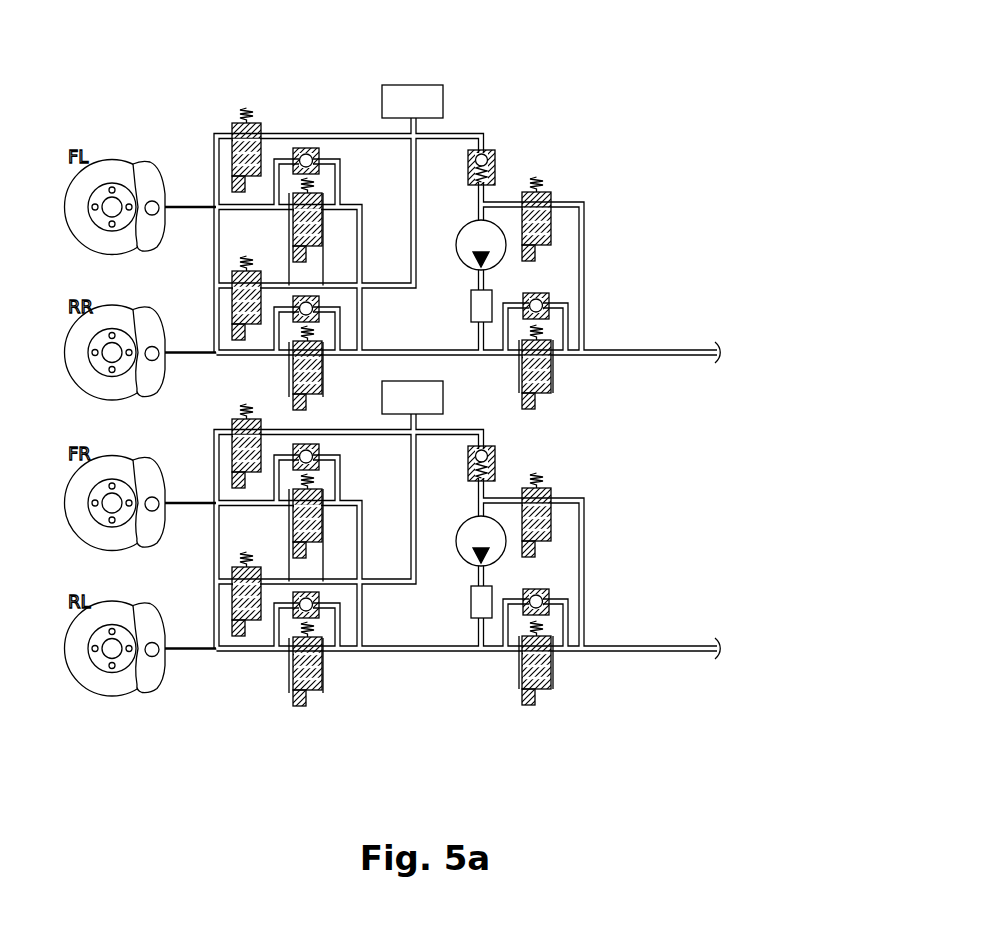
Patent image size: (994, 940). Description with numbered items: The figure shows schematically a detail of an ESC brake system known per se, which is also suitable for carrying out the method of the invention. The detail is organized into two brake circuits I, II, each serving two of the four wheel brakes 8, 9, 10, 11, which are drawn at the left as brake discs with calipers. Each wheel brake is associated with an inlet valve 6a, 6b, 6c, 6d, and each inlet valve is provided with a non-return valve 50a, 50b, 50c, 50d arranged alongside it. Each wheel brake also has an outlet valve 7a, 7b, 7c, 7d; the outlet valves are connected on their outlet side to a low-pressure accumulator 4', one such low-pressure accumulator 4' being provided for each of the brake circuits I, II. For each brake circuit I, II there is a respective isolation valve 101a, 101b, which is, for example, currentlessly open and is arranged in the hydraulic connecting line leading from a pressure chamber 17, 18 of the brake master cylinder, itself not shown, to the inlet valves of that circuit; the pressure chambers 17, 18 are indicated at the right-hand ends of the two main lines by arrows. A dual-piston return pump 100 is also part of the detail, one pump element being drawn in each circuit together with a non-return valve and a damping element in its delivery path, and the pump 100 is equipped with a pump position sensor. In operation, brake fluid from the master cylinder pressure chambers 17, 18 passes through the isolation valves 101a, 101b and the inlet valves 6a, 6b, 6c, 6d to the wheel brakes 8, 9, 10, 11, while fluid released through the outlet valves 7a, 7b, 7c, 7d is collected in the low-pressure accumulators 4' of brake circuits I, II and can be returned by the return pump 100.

The low-pressure accumulator 4' is at (448, 208).
The inlet valve 6a is at (317, 223).
The inlet valve 6b is at (317, 371).
The inlet valve 6c is at (317, 519).
The inlet valve 6d is at (317, 667).
The outlet valve 7a is at (232, 128).
The outlet valve 7b is at (232, 276).
The outlet valve 7c is at (232, 424).
The outlet valve 7d is at (232, 572).
The non-return valve 50a is at (304, 148).
The non-return valve 50b is at (300, 297).
The non-return valve 50c is at (304, 444).
The non-return valve 50d is at (300, 593).
The wheel brake 8 is at (151, 185).
The wheel brake 9 is at (151, 333).
The wheel brake 10 is at (151, 481).
The wheel brake 11 is at (151, 629).
The dual-piston return pump 100 is at (457, 220).
The isolation valve 101a is at (548, 362).
The isolation valve 101b is at (548, 658).
The pressure chamber 17 is at (728, 648).
The pressure chamber 18 is at (728, 352).
The brake circuit I is at (616, 646).
The brake circuit II is at (616, 350).